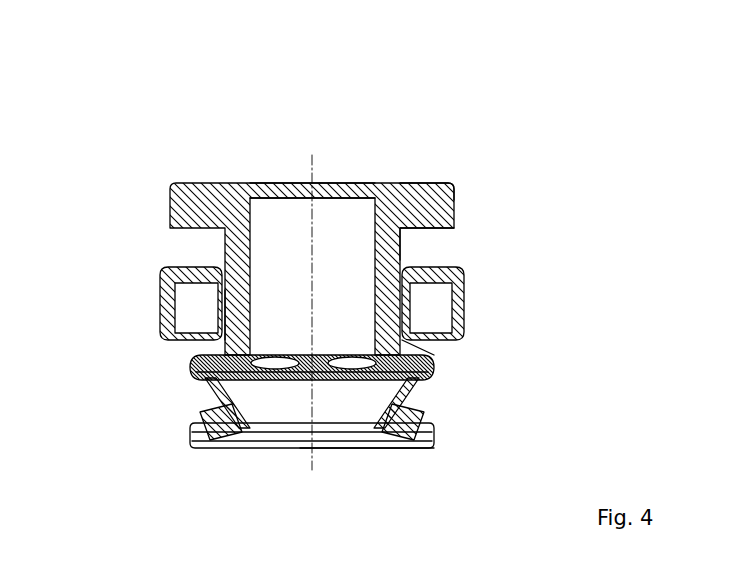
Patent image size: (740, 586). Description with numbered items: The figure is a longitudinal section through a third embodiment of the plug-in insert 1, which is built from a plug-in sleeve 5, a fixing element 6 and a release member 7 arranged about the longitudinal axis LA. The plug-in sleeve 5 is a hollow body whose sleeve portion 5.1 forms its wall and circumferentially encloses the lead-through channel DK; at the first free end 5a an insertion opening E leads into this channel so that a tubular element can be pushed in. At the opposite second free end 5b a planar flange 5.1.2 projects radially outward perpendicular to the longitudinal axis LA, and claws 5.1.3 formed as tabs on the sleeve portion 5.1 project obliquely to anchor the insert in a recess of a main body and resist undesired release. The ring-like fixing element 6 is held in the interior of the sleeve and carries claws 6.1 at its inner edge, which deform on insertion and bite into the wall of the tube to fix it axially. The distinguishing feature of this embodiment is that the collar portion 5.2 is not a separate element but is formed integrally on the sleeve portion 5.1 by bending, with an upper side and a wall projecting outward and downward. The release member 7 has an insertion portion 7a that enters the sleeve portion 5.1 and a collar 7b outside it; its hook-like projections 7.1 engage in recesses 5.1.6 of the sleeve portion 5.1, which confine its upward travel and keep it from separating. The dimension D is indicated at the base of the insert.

The plug-in insert 1 is at (490, 118).
The release member 7 is at (457, 215).
The insertion portion 7a is at (402, 256).
The collar 7b is at (441, 184).
The hook-like projection 7.1 is at (216, 311).
The lead-through channel DK is at (270, 177).
The insertion opening E is at (332, 177).
The plug-in sleeve 5 is at (313, 369).
The first free end 5a is at (192, 262).
The collar portion 5.2 is at (472, 314).
The sleeve portion 5.1 is at (326, 410).
The recess 5.1.6 is at (418, 337).
The claw 5.1.3 is at (207, 420).
The flange 5.1.2 is at (186, 456).
The second free end 5b is at (389, 458).
The fixing element 6 is at (302, 358).
The claw 6.1 is at (418, 407).
The base plate / diaphragm D is at (262, 459).
The longitudinal axis LA is at (306, 472).